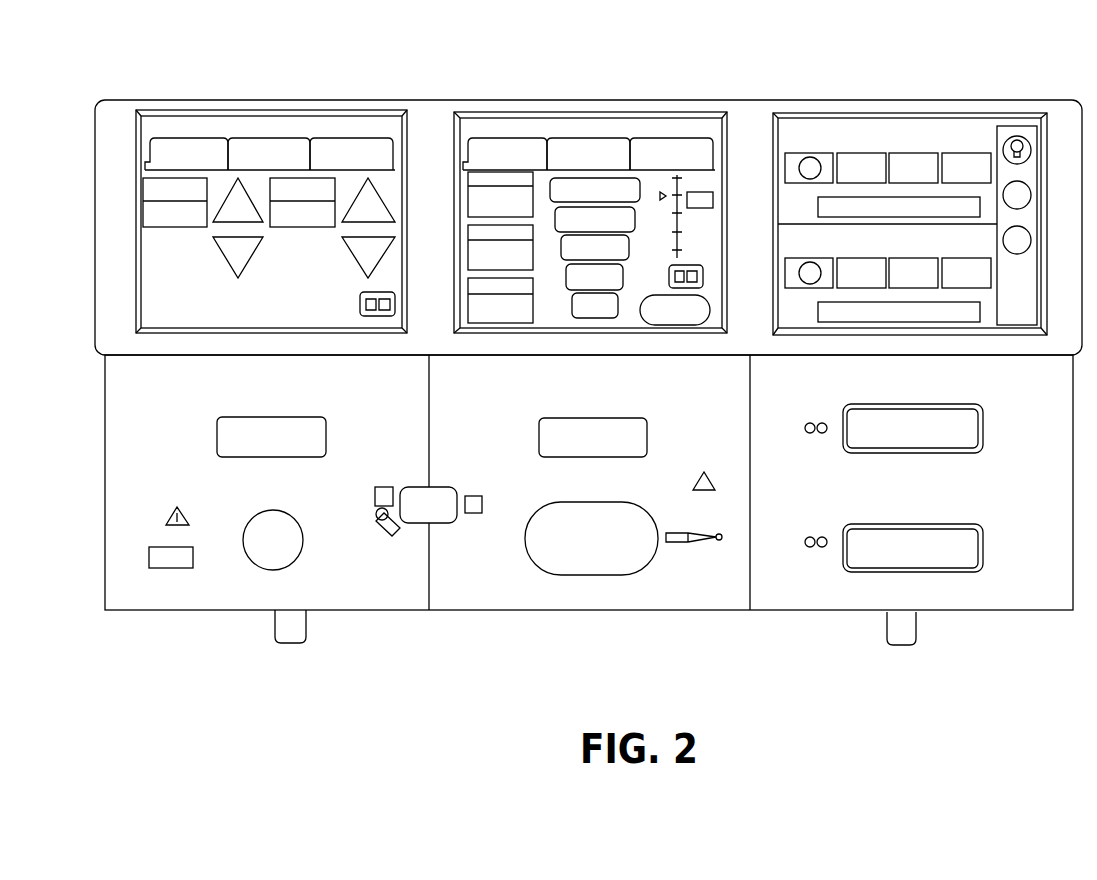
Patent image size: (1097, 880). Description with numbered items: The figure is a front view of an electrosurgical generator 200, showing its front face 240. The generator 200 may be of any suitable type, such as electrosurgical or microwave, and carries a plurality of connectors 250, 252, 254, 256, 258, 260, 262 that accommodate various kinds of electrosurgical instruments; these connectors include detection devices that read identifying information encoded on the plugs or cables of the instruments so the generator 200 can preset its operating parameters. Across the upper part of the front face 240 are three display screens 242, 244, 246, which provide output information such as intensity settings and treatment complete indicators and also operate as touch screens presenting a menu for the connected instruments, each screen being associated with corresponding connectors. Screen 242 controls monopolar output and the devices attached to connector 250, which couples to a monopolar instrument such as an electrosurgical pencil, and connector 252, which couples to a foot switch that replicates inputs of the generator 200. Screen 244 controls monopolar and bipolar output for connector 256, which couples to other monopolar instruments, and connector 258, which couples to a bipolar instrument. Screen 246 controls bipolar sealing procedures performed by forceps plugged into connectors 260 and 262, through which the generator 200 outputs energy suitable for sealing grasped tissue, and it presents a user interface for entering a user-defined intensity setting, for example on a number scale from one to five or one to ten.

The generator 200 is at (953, 56).
The front face 240 is at (458, 100).
The display screen 242 is at (332, 110).
The display screen 244 is at (593, 112).
The display screen 246 is at (857, 115).
The connector 250 is at (217, 437).
The connector 252 is at (250, 520).
The connector 254 is at (420, 487).
The connector 256 is at (565, 417).
The connector 258 is at (540, 505).
The connector 260 is at (866, 403).
The connector 262 is at (866, 523).